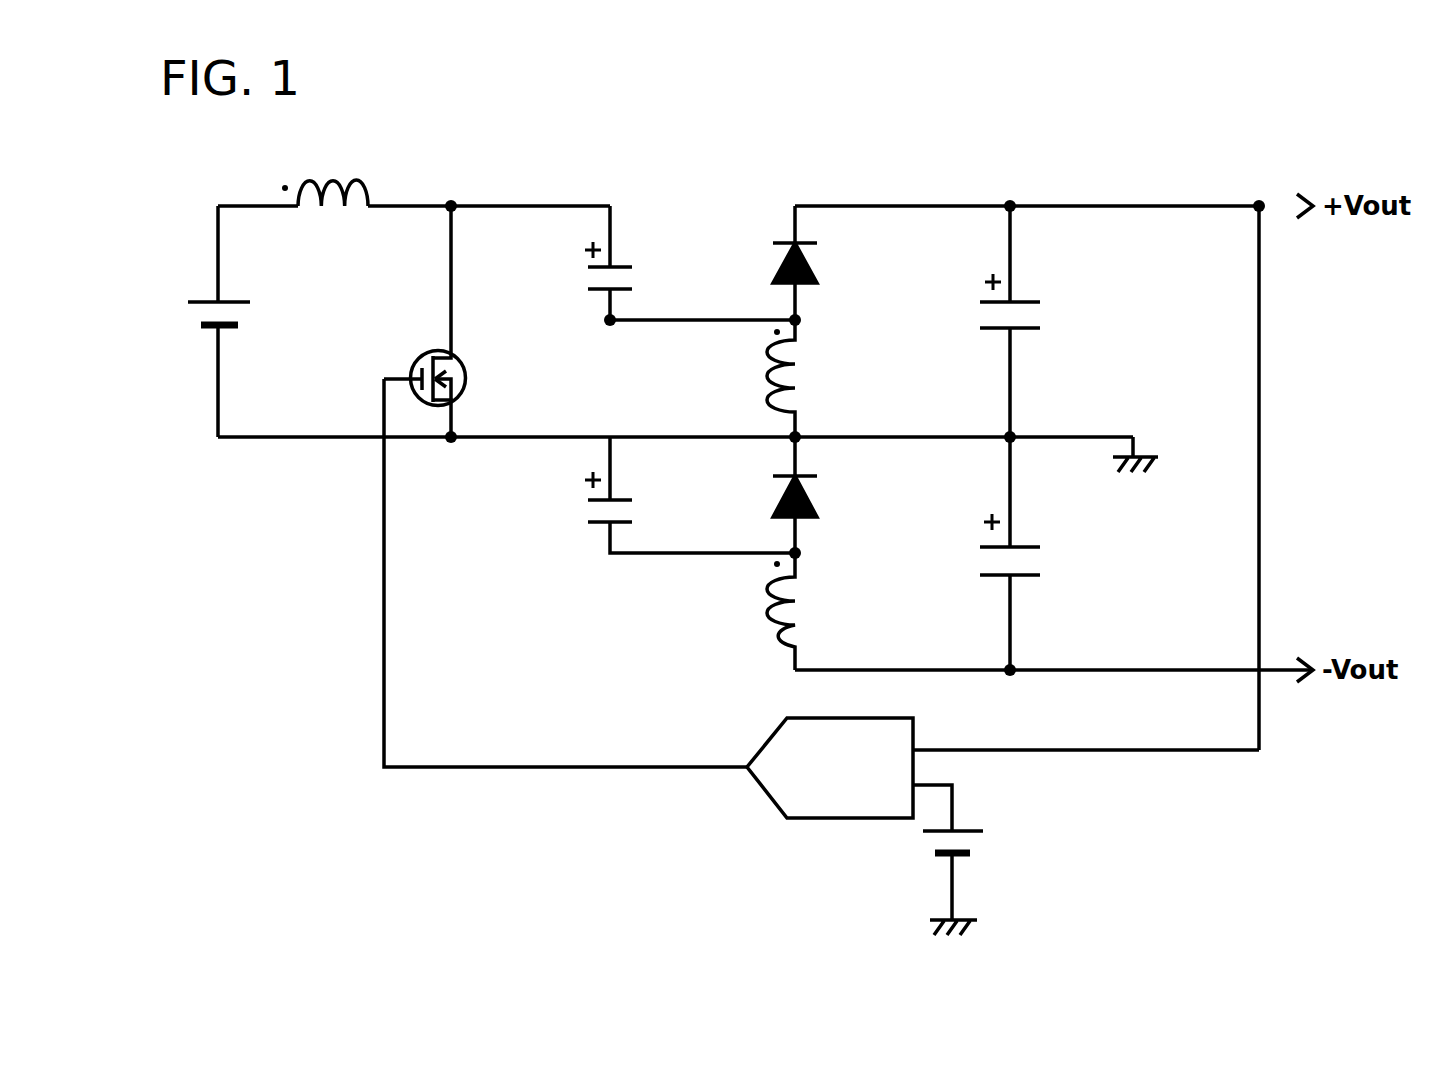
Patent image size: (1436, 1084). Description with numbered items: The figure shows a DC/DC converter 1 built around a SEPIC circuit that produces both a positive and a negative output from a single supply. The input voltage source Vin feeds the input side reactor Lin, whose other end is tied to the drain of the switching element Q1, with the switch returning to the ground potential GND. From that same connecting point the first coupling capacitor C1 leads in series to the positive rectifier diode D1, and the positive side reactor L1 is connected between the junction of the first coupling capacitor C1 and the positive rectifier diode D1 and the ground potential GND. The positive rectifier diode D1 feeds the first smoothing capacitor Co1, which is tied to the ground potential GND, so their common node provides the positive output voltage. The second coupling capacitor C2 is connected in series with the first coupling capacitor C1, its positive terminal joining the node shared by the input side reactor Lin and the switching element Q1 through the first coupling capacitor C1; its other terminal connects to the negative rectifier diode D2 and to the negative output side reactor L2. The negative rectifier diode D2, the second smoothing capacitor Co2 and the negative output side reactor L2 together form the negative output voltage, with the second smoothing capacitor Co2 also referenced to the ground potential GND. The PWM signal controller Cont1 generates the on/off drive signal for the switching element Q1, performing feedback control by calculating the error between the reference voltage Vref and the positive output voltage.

The DC/DC converter 1 is at (828, 183).
The input side reactor Lin is at (325, 173).
The input voltage source Vin is at (243, 321).
The switching element Q1 is at (452, 321).
The first coupling capacitor C1 is at (590, 263).
The second coupling capacitor C2 is at (671, 495).
The positive rectifier diode D1 is at (816, 263).
The negative rectifier diode D2 is at (816, 495).
The positive side reactor L1 is at (804, 378).
The negative output side reactor L2 is at (804, 611).
The first smoothing capacitor Co1 is at (1028, 321).
The second smoothing capacitor Co2 is at (1030, 553).
The PWM signal controller Cont1 is at (875, 822).
The reference voltage Vref is at (979, 877).
The ground potential GND is at (1121, 437).